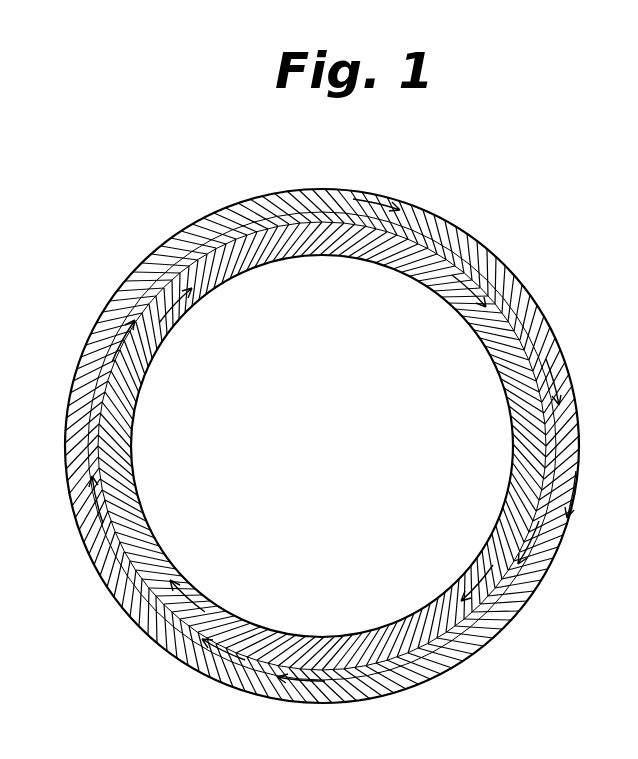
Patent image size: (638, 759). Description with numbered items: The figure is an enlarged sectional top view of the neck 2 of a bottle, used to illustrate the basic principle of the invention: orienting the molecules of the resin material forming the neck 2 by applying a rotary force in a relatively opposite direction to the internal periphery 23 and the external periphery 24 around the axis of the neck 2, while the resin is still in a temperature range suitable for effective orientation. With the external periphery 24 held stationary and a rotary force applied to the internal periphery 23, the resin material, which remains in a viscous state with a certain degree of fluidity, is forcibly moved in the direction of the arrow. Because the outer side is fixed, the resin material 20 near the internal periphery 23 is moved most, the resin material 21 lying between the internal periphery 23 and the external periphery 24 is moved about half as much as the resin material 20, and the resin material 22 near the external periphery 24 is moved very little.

The hose 2 is at (449, 205).
The intermediate layer 20 is at (313, 247).
The reinforcing layer 21 is at (318, 217).
The outer reinforcing layer 22 is at (273, 196).
The inner tube 23 is at (118, 434).
The outer cover 24 is at (72, 513).